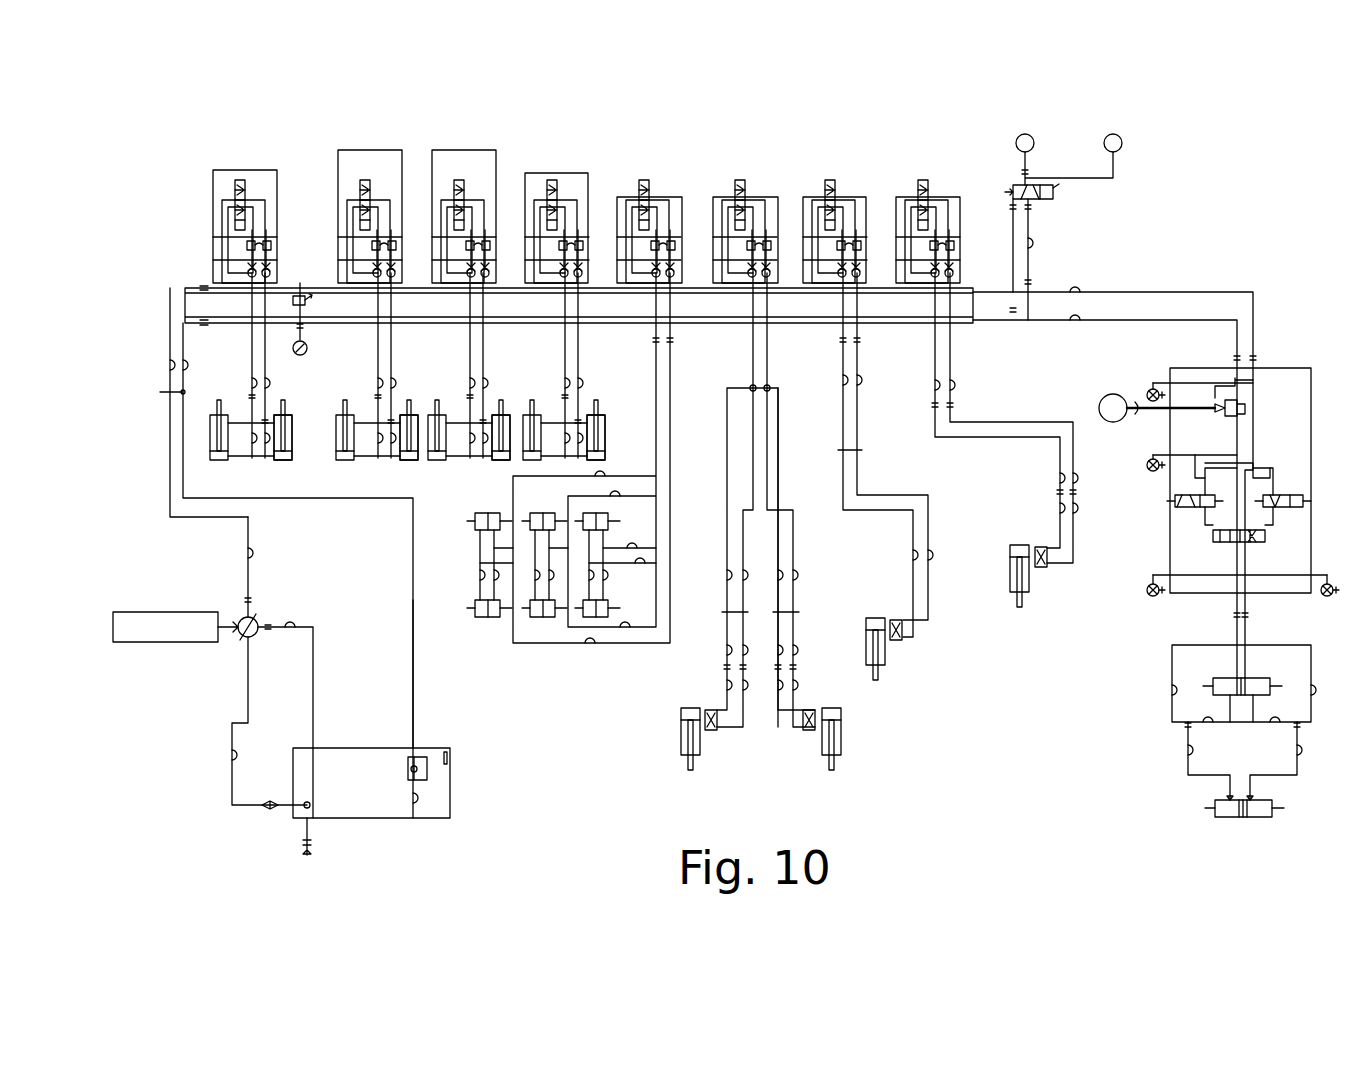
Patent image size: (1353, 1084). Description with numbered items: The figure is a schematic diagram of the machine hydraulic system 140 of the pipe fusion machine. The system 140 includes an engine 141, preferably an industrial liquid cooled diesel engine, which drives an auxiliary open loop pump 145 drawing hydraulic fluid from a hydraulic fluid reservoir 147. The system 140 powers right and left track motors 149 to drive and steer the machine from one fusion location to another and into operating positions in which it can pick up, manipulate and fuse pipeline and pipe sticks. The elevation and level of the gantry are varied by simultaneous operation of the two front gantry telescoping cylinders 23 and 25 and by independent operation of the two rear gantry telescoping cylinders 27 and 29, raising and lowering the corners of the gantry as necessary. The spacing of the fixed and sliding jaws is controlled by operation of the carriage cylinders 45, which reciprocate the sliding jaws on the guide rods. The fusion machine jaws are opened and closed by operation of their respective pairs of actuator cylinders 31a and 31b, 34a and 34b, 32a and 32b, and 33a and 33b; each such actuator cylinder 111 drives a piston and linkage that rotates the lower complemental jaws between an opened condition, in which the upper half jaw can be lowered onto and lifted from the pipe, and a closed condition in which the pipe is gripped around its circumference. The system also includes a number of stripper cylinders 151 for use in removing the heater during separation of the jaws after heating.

The machine hydraulic system 140 is at (639, 132).
The track motors 149 is at (1118, 135).
The actuator cylinder 31a is at (219, 400).
The actuator cylinder 31b is at (318, 372).
The actuator cylinder 34a is at (342, 463).
The actuator cylinder 34b is at (412, 402).
The actuator cylinder 32a is at (436, 463).
The actuator cylinder 32b is at (504, 402).
The actuator cylinder 33a is at (522, 462).
The actuator cylinder 33b is at (603, 435).
The stripper cylinders 151 is at (608, 605).
The cylinder 111 is at (371, 529).
The engine 141 is at (118, 612).
The auxiliary open loop pump 145 is at (265, 625).
The hydraulic fluid reservoir 147 is at (358, 818).
The telescoping cylinder leg 25 is at (684, 745).
The telescoping cylinder leg 23 is at (840, 742).
The telescoping cylinder leg 29 is at (870, 620).
The telescoping cylinder leg 27 is at (1012, 565).
The carriage cylinders 45 is at (1255, 815).